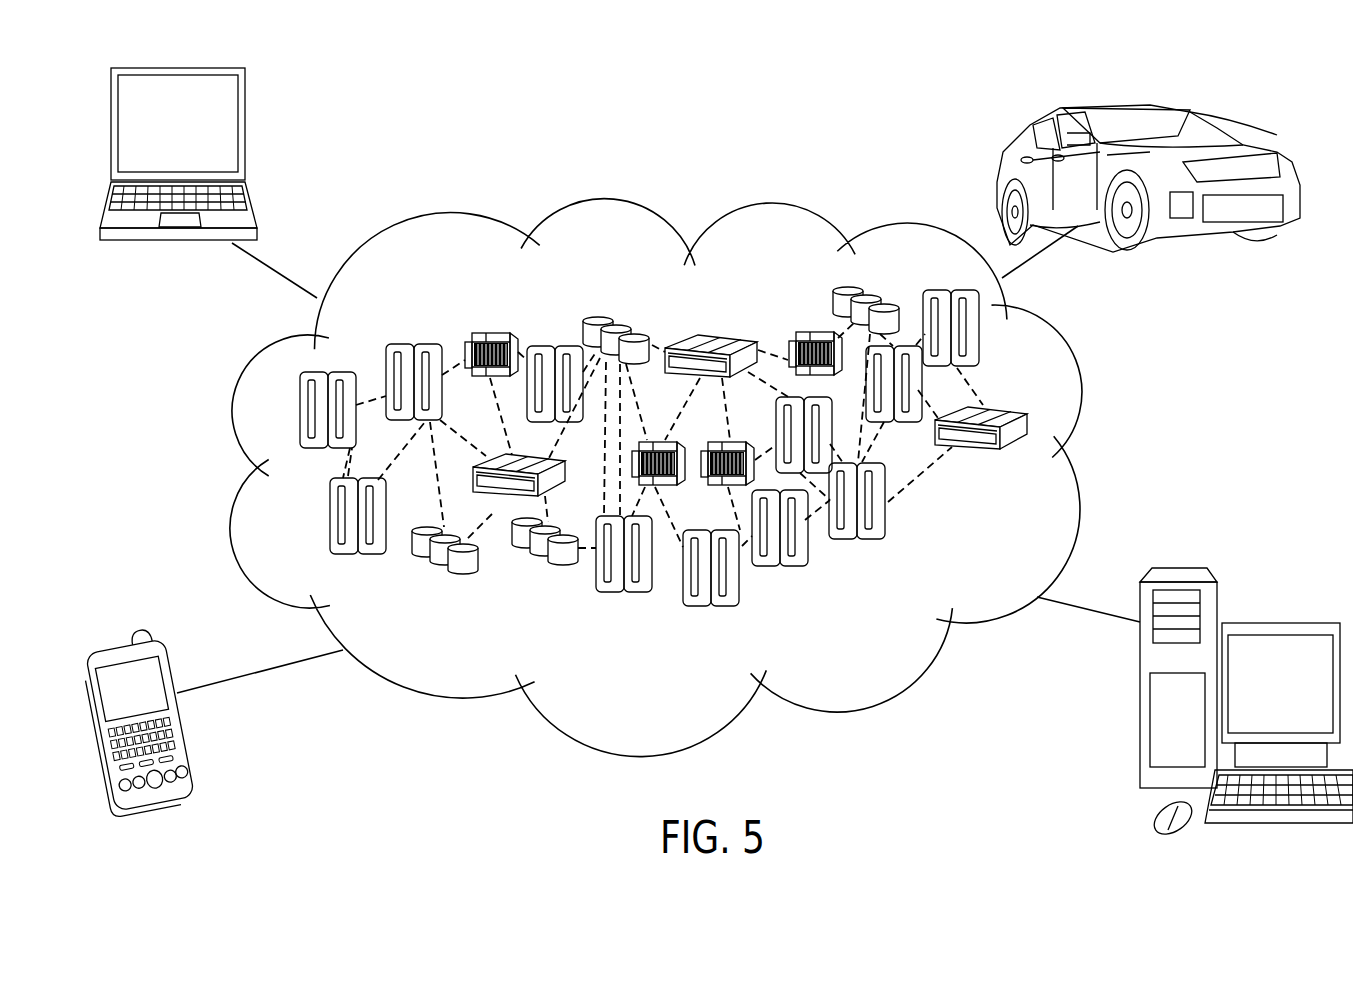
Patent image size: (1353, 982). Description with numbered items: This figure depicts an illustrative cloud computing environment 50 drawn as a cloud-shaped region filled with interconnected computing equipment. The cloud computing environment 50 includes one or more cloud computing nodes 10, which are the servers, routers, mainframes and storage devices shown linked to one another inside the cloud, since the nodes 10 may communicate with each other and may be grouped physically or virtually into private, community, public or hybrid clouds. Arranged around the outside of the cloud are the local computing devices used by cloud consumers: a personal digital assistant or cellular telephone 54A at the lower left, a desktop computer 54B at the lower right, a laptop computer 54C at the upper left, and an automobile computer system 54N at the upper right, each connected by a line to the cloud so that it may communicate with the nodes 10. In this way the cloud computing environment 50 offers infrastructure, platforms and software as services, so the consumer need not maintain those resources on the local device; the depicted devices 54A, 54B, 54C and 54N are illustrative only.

The cloud computing node 10 is at (1071, 479).
The cloud computing environment 50 is at (1077, 385).
The personal digital assistant or cellular telephone 54A is at (184, 733).
The desktop computer 54B is at (1282, 621).
The laptop computer 54C is at (246, 128).
The automobile computer system 54N is at (1000, 165).